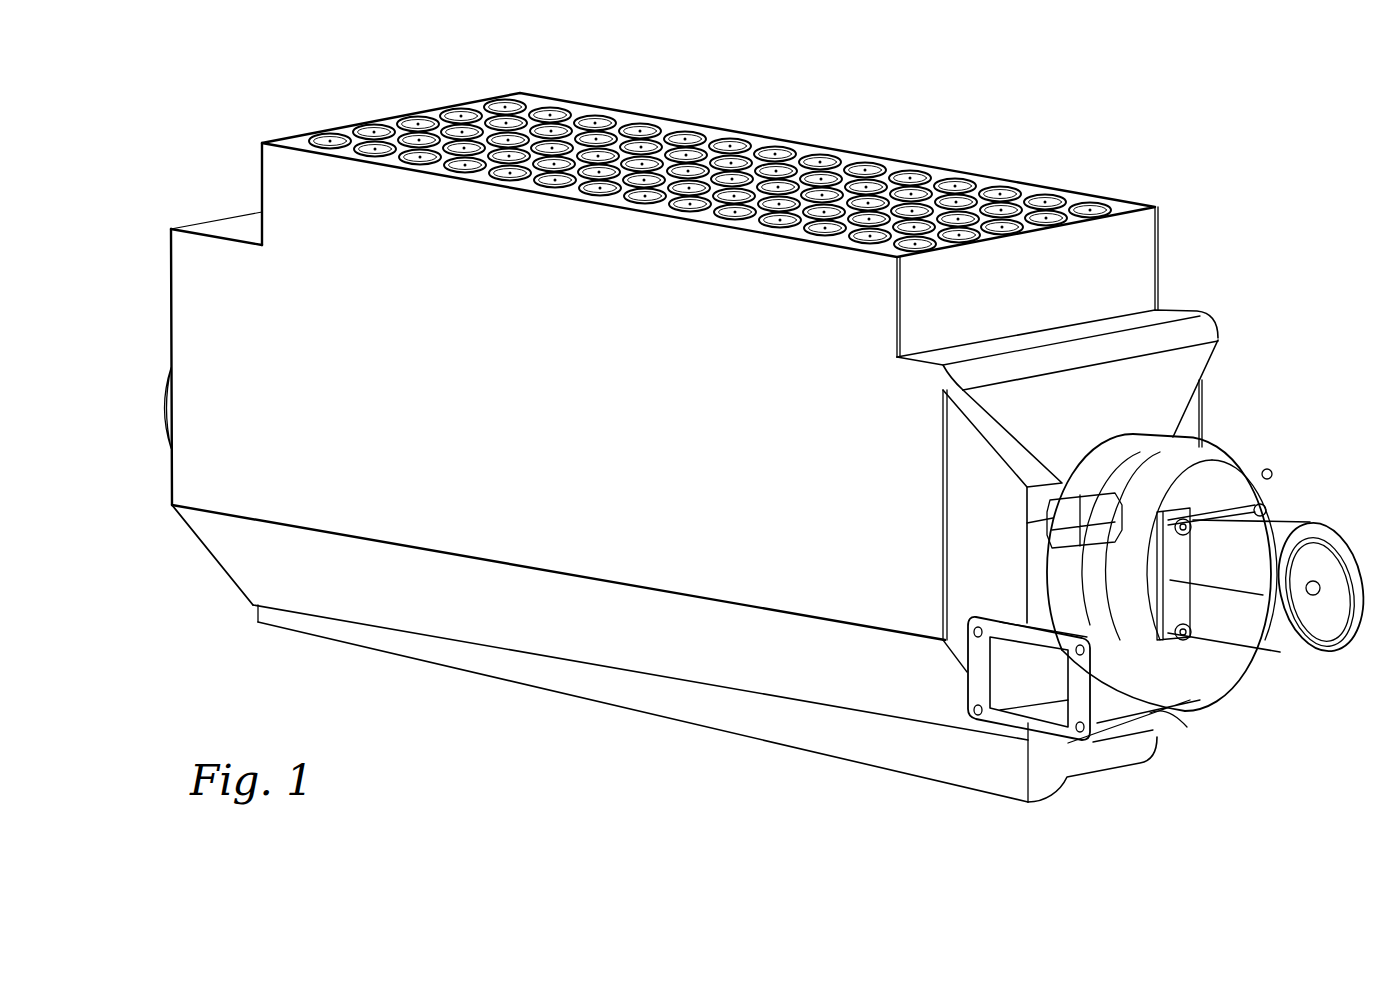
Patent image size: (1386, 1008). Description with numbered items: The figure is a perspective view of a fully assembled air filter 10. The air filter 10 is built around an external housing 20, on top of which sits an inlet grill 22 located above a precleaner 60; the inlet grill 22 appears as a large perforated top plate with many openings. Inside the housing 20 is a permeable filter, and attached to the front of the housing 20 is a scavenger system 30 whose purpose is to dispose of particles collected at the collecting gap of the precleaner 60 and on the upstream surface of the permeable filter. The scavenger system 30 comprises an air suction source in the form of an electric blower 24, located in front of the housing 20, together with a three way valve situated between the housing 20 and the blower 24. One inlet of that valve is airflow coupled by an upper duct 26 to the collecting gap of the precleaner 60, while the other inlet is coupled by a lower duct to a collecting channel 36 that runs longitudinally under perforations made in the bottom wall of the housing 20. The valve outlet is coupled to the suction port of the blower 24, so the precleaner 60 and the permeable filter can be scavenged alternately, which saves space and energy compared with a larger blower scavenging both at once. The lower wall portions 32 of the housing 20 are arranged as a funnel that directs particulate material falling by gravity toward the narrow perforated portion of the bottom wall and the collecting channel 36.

The air filter 10 is at (1304, 124).
The external housing 20 is at (187, 270).
The inlet grill 22 is at (1035, 187).
The electric blower 24 is at (1252, 466).
The upper duct 26 is at (1212, 346).
The scavenger system 30 is at (1183, 792).
The lower wall portions 32 is at (250, 578).
The collecting channel 36 is at (742, 715).
The precleaner 60 is at (448, 106).